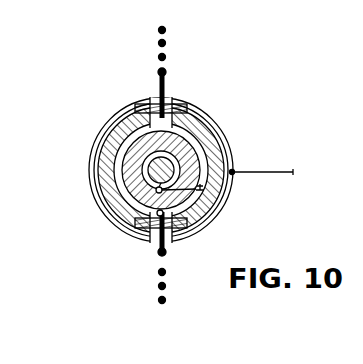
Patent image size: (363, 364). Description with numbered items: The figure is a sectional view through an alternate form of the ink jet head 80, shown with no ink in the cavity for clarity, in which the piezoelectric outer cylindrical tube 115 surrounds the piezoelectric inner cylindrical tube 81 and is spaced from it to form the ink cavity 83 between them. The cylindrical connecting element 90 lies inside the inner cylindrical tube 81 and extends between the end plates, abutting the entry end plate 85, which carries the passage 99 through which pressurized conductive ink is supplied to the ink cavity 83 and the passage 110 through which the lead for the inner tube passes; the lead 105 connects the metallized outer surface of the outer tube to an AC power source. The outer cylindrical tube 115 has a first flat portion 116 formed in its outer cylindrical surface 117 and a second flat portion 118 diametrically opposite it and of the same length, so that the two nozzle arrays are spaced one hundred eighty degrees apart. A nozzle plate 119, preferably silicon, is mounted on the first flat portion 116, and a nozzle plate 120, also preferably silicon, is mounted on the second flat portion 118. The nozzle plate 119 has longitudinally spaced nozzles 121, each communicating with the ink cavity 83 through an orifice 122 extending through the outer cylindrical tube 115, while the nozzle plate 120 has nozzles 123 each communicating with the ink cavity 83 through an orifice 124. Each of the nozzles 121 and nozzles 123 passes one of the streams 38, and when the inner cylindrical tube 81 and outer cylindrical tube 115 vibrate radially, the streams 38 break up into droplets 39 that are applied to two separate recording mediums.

The streams 38 is at (165, 82).
The droplets 39 is at (164, 28).
The ink jet head 80 is at (103, 250).
The inner cylindrical tube 81 is at (174, 158).
The ink cavity 83 is at (156, 190).
The entry end plate 85 is at (88, 167).
The cylindrical connecting element 90 is at (217, 130).
The passage 99 is at (157, 213).
The lead 105 is at (258, 172).
The passage 110 is at (204, 189).
The outer cylindrical tube 115 is at (100, 127).
The first flat portion 116 is at (138, 102).
The outer cylindrical surface 117 is at (97, 146).
The second flat portion 118 is at (134, 230).
The nozzle plate 119 is at (174, 104).
The nozzle plate 120 is at (172, 233).
The nozzles 121 is at (150, 98).
The orifice 122 is at (134, 110).
The nozzles 123 is at (158, 236).
The orifice 124 is at (180, 225).